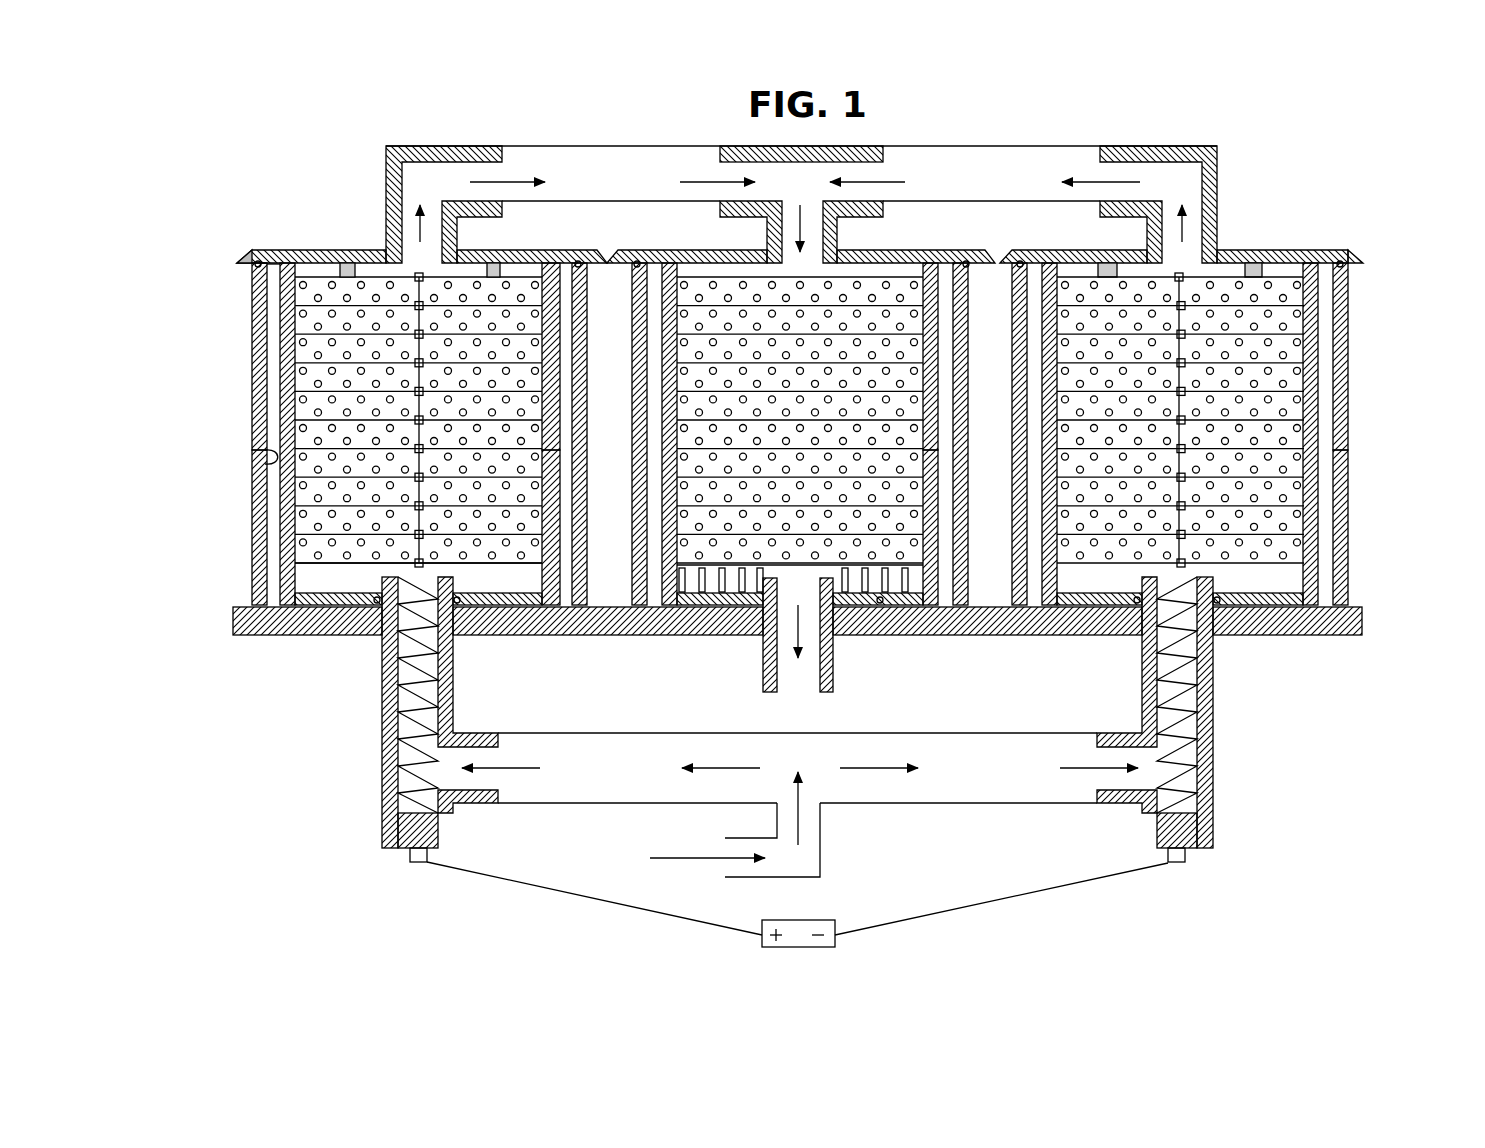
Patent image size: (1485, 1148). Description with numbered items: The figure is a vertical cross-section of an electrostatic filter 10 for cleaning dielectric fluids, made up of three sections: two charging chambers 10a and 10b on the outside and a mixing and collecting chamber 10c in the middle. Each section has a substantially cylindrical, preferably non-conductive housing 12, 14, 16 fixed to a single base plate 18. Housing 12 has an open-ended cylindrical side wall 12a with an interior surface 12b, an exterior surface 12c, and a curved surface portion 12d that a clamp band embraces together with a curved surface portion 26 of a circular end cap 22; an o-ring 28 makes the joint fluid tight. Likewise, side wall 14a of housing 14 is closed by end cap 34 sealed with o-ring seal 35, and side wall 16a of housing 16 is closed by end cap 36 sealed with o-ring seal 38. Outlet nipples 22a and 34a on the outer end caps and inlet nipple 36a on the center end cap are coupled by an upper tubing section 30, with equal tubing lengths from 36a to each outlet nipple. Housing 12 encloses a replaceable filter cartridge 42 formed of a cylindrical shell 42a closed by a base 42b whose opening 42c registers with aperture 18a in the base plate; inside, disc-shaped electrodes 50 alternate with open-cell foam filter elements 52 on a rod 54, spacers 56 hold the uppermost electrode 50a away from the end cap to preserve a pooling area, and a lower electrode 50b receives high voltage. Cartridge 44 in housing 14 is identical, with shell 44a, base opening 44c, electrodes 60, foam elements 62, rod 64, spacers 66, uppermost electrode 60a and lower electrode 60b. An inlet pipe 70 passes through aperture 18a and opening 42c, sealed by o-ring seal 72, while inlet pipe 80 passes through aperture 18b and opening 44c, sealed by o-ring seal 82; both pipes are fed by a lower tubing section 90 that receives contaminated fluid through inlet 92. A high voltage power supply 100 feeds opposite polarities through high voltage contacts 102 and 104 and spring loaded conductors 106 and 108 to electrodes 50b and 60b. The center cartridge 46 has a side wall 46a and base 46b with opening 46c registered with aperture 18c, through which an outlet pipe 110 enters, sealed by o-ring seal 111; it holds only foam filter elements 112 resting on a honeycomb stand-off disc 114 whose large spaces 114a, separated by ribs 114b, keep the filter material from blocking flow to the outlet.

The electrostatic filter 10 is at (303, 174).
The charging chamber section 10a is at (232, 360).
The charging chamber section 10b is at (1356, 518).
The mixing and collecting chamber section 10c is at (606, 280).
The housing 12 is at (252, 393).
The cylindrical side wall 12a is at (255, 420).
The interior surface 12b is at (266, 458).
The exterior surface 12c is at (252, 500).
The curved surface portion 12d is at (247, 263).
The housing 14 is at (1348, 452).
The cylindrical side wall 14a is at (1348, 490).
The housing 16 is at (632, 325).
The cylindrical side wall 16a is at (660, 400).
The base plate 18 is at (268, 632).
The aperture 18a is at (383, 642).
The aperture 18b is at (1152, 635).
The aperture 18c is at (790, 620).
The end cap 22 is at (325, 250).
The outlet nipple 22a is at (458, 237).
The curved surface portion 26 is at (253, 262).
The o-ring 28 is at (262, 262).
The tubing section 30 is at (552, 145).
The end cap 34 is at (1313, 250).
The outlet nipple 34a is at (1147, 237).
The o-ring seal 35 is at (1350, 260).
The end cap 36 is at (953, 262).
The inlet nipple 36a is at (838, 237).
The o-ring seal 38 is at (968, 255).
The filter cartridge 42 is at (560, 455).
The cylindrical shell 42a is at (560, 520).
The base 42b is at (527, 606).
The opening 42c is at (440, 600).
The filter cartridge 44 is at (1042, 400).
The cylindrical shell 44a is at (935, 462).
The opening 44c is at (1220, 607).
The filter cartridge 46 is at (935, 508).
The cylindrical side wall 46a is at (940, 562).
The base 46b is at (928, 606).
The opening 46c is at (842, 608).
The disc-shaped electrodes 50 is at (345, 545).
The uppermost electrode 50a is at (386, 270).
The lower electrode 50b is at (555, 606).
The open-cell foam filter elements 52 is at (330, 525).
The rod 54 is at (420, 325).
The spacers 56 is at (500, 270).
The disc-shaped electrodes 60 is at (1300, 527).
The uppermost electrode 60a is at (1232, 275).
The lower electrode 60b is at (1060, 610).
The foam filter elements 62 is at (1290, 548).
The rod 64 is at (1318, 410).
The spacers 66 is at (1250, 268).
The inlet pipe 70 is at (383, 736).
The o-ring seal 72 is at (460, 593).
The inlet pipe 80 is at (1213, 722).
The o-ring seal 82 is at (1137, 593).
The lower tubing section 90 is at (928, 808).
The inlet 92 is at (828, 845).
The high voltage power supply 100 is at (832, 921).
The high voltage contact 102 is at (398, 835).
The high voltage contact 104 is at (1197, 838).
The spring loaded conductor 106 is at (395, 810).
The spring loaded conductor 108 is at (1213, 777).
The outlet pipe 110 is at (834, 698).
The o-ring seal 111 is at (881, 604).
The open-cell foam filter elements 112 is at (920, 322).
The stand-off disc 114 is at (690, 582).
The spaces 114a is at (712, 582).
The ribs 114b is at (745, 582).